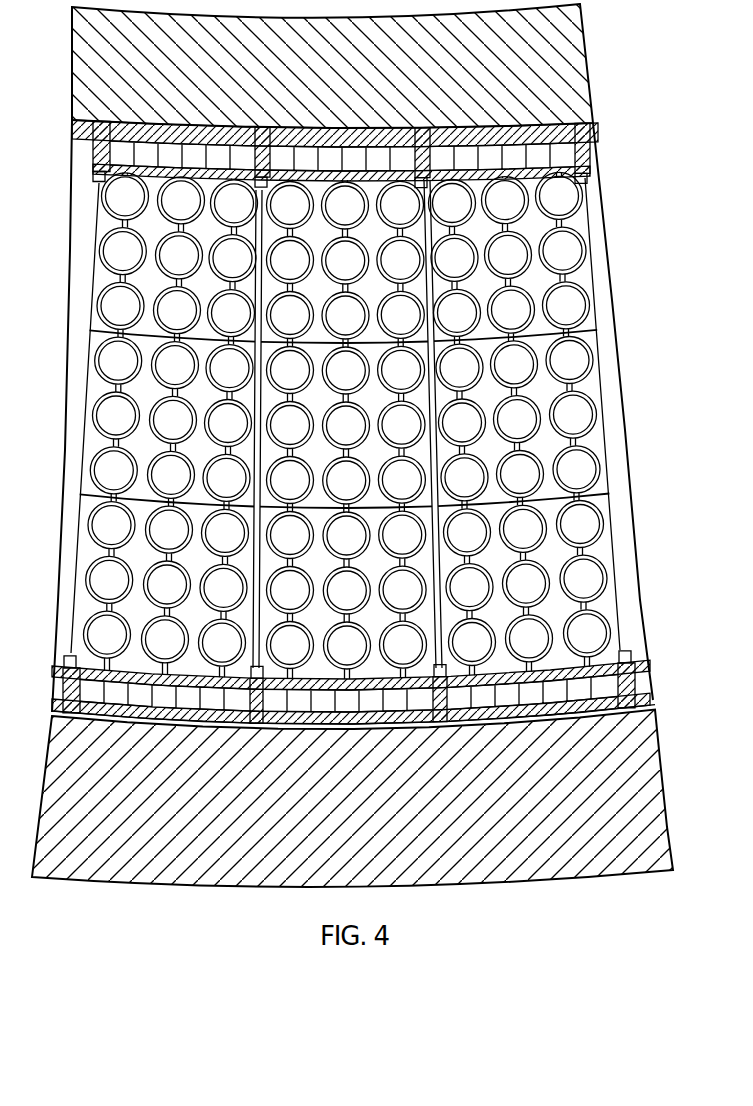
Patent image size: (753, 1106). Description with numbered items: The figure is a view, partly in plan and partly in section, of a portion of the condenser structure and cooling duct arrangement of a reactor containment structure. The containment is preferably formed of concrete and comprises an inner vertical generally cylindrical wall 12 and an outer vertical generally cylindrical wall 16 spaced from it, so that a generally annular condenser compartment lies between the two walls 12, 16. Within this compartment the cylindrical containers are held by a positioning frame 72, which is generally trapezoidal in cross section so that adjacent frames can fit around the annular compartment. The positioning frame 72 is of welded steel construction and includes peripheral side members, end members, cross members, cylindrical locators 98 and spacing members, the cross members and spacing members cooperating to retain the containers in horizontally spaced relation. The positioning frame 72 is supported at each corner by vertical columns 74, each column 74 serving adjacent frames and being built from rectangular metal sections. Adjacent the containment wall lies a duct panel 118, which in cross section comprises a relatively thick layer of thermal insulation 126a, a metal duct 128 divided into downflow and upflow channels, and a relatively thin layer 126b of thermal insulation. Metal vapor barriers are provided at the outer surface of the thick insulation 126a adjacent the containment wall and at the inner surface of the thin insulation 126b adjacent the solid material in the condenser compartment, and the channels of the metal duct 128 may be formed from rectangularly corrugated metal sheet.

The inner vertical generally cylindrical wall 12 is at (590, 72).
The outer vertical generally cylindrical wall 16 is at (664, 790).
The positioning frame 72 is at (661, 369).
The vertical column 74 is at (643, 655).
The cylindrical locator 98 is at (577, 614).
The duct panel 118 is at (714, 697).
The thermal insulation layer 126a is at (614, 710).
The thermal insulation layer 126b is at (643, 665).
The metal duct 128 is at (612, 700).